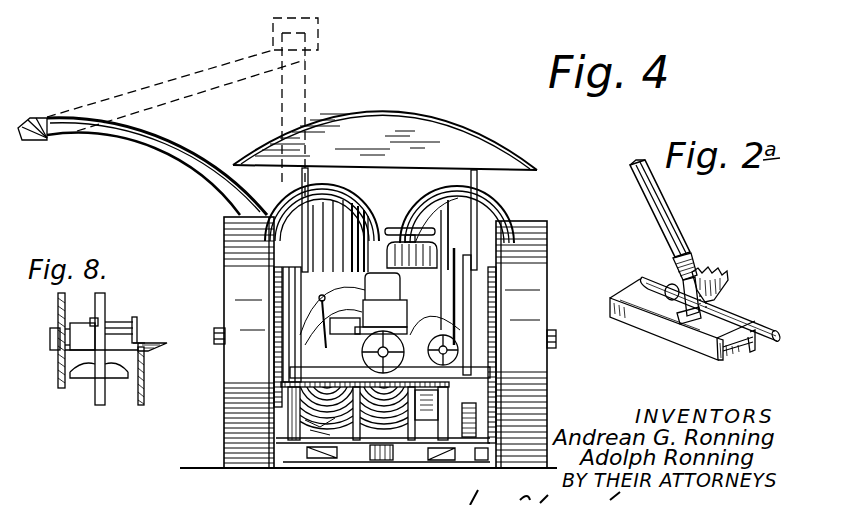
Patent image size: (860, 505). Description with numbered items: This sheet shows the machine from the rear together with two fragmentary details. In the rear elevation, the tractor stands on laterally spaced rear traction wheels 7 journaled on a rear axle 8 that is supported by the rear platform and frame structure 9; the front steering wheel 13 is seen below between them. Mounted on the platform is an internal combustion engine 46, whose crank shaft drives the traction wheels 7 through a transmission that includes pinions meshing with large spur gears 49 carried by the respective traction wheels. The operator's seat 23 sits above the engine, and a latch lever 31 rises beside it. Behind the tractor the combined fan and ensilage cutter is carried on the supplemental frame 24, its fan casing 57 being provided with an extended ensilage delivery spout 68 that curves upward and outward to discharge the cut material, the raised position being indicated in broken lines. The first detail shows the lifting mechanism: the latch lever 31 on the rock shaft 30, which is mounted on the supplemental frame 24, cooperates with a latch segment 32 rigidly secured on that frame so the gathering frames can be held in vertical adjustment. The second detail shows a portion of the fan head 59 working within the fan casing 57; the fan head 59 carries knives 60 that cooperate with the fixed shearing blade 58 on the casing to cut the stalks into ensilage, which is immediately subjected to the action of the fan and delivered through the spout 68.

In FIG. 4, the ensilage delivery spout 68 is at (225, 190).
In FIG. 4, the rear traction wheels 7 is at (536, 278).
In FIG. 4, the rear axle 8 is at (215, 341).
In FIG. 4, the large spur gears 49 is at (278, 315).
In FIG. 4, the operator's seat 23 is at (428, 241).
In FIG. 4, the latch lever 31 is at (456, 257).
In FIG. 2A, the latch lever 31 is at (657, 211).
In FIG. 4, the internal combustion engine 46 is at (373, 288).
In FIG. 4, the rear platform and frame structure 9 is at (475, 348).
In FIG. 4, the fan casing 57 is at (308, 418).
In FIG. 8, the fan casing 57 is at (58, 310).
In FIG. 4, the front steering wheel 13 is at (370, 456).
In FIG. 8, the fan head 59 is at (103, 306).
In FIG. 8, the knives 60 is at (137, 323).
In FIG. 8, the fixed shearing blade 58 is at (155, 347).
In FIG. 2A, the latch segment 32 is at (724, 274).
In FIG. 2A, the supplemental frame 24 is at (648, 325).
In FIG. 2A, the rock shaft 30 is at (750, 323).